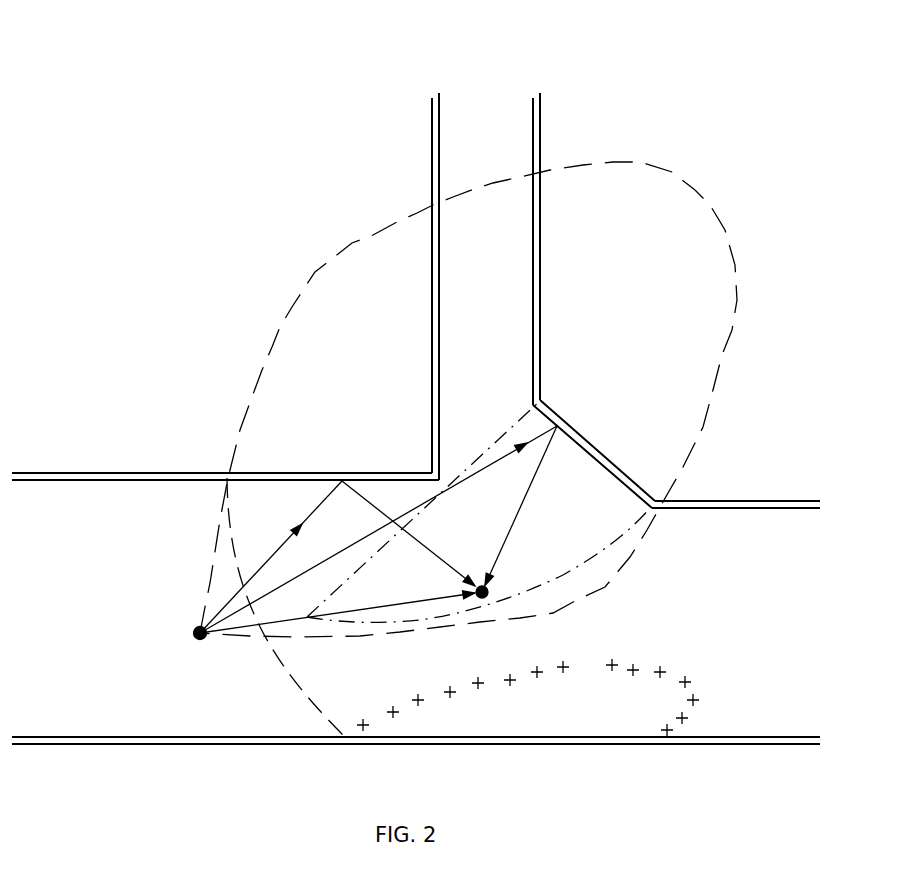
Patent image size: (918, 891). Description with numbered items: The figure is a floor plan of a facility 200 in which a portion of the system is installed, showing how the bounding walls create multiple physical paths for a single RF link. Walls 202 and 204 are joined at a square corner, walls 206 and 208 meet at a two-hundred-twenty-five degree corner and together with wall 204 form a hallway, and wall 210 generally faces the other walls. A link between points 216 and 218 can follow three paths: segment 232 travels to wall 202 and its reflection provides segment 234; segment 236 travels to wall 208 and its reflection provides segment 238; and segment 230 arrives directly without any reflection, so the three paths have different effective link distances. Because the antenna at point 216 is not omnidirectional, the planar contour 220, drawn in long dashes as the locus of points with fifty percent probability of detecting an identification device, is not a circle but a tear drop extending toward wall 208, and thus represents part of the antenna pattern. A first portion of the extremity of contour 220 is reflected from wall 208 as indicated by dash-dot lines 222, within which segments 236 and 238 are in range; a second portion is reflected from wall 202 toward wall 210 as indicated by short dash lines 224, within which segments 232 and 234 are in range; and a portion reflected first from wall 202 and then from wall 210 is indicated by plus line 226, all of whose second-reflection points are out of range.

The facility 200 is at (218, 82).
The wall 202 is at (97, 472).
The wall 204 is at (431, 369).
The wall 206 is at (541, 286).
The wall 208 is at (589, 441).
The wall 210 is at (143, 746).
The point 216 is at (193, 631).
The point 218 is at (476, 586).
The planar contour 220 is at (680, 173).
The dash-dot lines 222 is at (644, 519).
The short dash lines 224 is at (291, 673).
The plus line 226 is at (686, 679).
The segment 230 is at (414, 600).
The segment 232 is at (319, 508).
The segment 234 is at (386, 515).
The segment 236 is at (461, 482).
The segment 238 is at (516, 521).